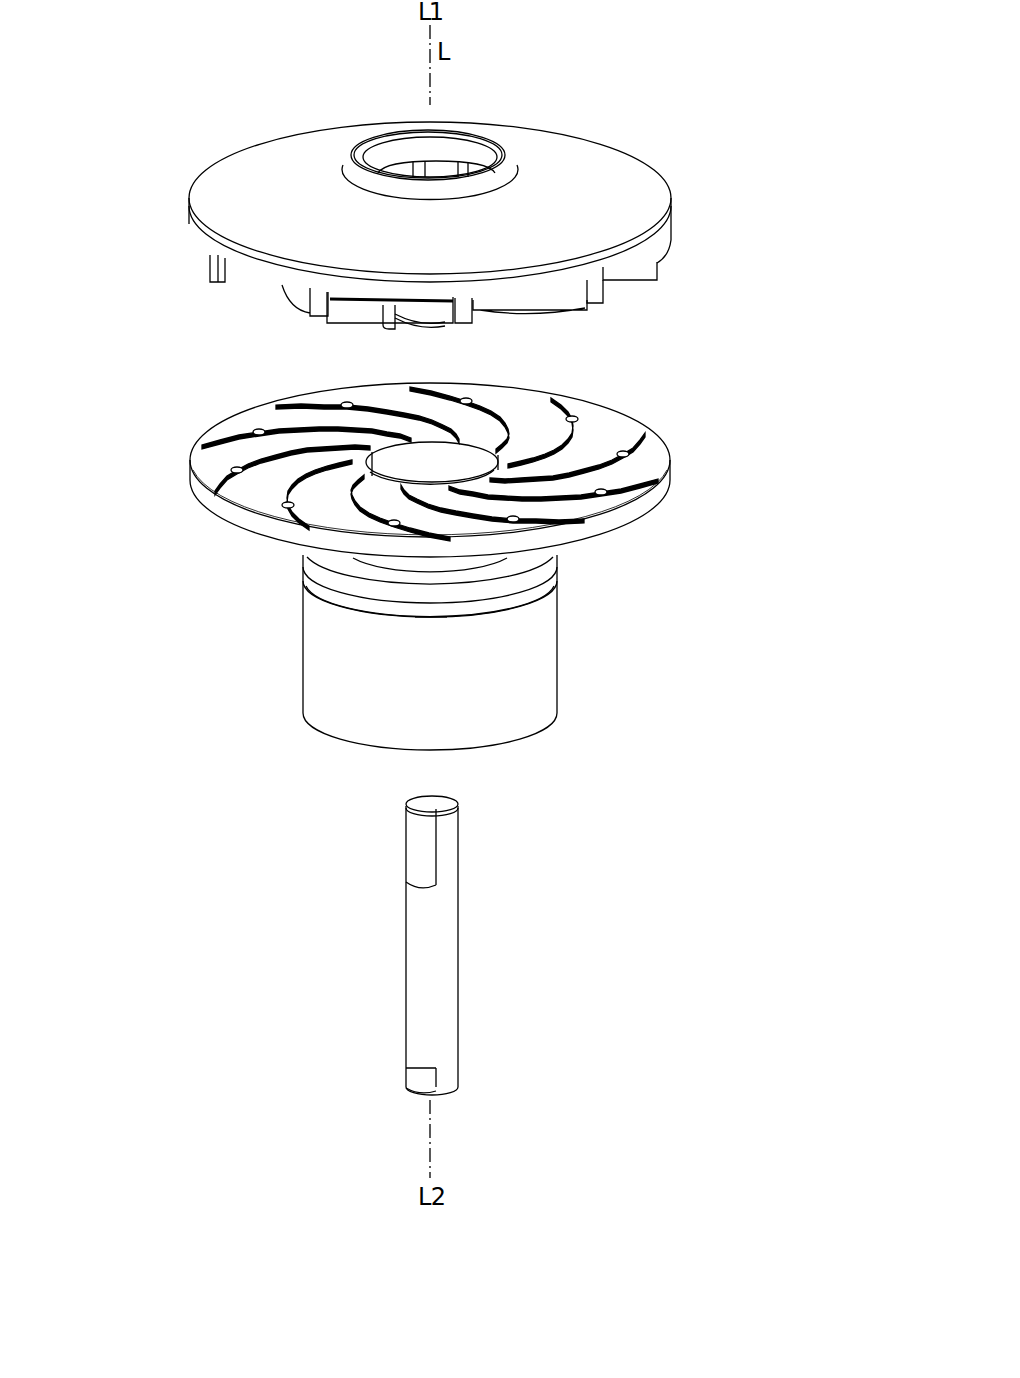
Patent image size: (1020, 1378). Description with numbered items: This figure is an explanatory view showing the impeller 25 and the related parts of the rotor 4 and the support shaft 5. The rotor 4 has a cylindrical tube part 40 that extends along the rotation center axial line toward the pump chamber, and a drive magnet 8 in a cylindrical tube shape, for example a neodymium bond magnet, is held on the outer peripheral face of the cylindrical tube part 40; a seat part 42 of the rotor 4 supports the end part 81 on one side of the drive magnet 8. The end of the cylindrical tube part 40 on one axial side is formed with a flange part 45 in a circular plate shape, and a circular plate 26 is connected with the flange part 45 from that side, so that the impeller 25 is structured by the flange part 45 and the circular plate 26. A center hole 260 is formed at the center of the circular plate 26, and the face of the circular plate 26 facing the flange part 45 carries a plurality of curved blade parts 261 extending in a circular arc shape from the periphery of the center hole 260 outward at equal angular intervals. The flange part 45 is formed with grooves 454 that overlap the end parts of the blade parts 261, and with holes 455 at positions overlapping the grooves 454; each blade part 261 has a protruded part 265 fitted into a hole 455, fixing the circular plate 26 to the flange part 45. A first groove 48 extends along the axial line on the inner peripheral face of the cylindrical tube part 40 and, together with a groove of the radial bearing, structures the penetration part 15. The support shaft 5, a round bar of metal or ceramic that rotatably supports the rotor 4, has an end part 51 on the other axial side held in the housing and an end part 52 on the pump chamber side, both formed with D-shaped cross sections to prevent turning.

The rotor 4 is at (190, 478).
The support shaft 5 is at (450, 943).
The drive magnet 8 is at (548, 658).
The penetration part 15 is at (480, 478).
The impeller 25 is at (724, 328).
The circular plate 26 is at (640, 197).
The cylindrical tube part 40 is at (383, 570).
The seat part 42 is at (550, 560).
The flange part 45 is at (612, 407).
The first groove 48 is at (372, 450).
The end part 51 is at (442, 1077).
The end part 52 is at (450, 835).
The end part 81 is at (388, 617).
The center hole 260 is at (462, 152).
The blade parts 261 is at (367, 300).
The protruded part 265 is at (394, 325).
The grooves 454 is at (635, 484).
The holes 455 is at (625, 452).